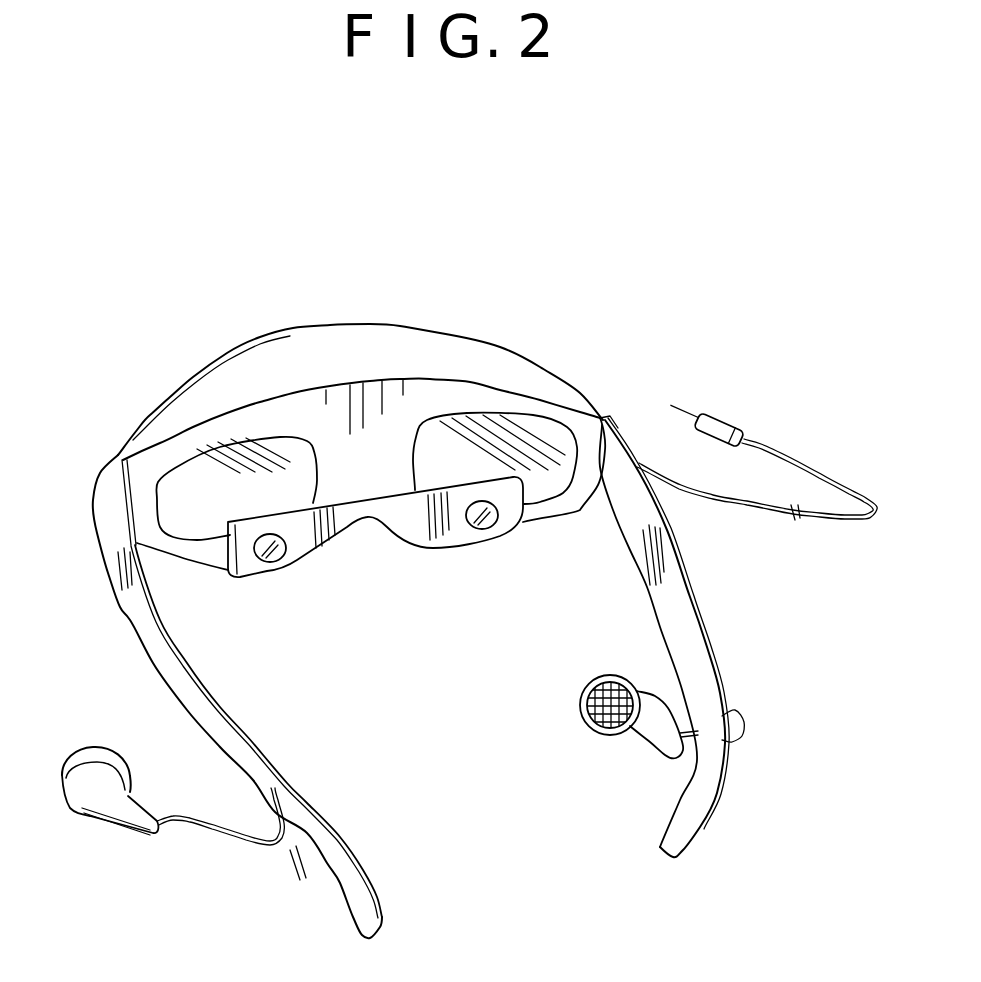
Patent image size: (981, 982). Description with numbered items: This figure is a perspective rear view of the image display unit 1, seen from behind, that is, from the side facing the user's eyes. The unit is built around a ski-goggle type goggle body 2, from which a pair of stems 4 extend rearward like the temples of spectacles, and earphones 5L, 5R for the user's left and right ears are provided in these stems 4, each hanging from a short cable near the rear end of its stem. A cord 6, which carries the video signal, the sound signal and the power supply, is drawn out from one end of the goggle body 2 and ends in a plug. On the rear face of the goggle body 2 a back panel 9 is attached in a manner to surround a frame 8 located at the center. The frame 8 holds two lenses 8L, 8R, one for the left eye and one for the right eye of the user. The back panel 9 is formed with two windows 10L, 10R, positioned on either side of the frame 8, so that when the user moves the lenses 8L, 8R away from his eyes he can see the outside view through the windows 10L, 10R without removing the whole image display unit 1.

The image display unit 1 is at (473, 296).
The goggle body 2 is at (537, 370).
The stems 4 is at (690, 615).
The left earphone 5L is at (93, 803).
The right earphone 5R is at (587, 730).
The cord 6 is at (800, 453).
The frame 8 is at (337, 530).
The left lens 8L is at (273, 553).
The right lens 8R is at (482, 527).
The back panel 9 is at (587, 480).
The left window 10L is at (193, 527).
The right window 10R is at (533, 500).